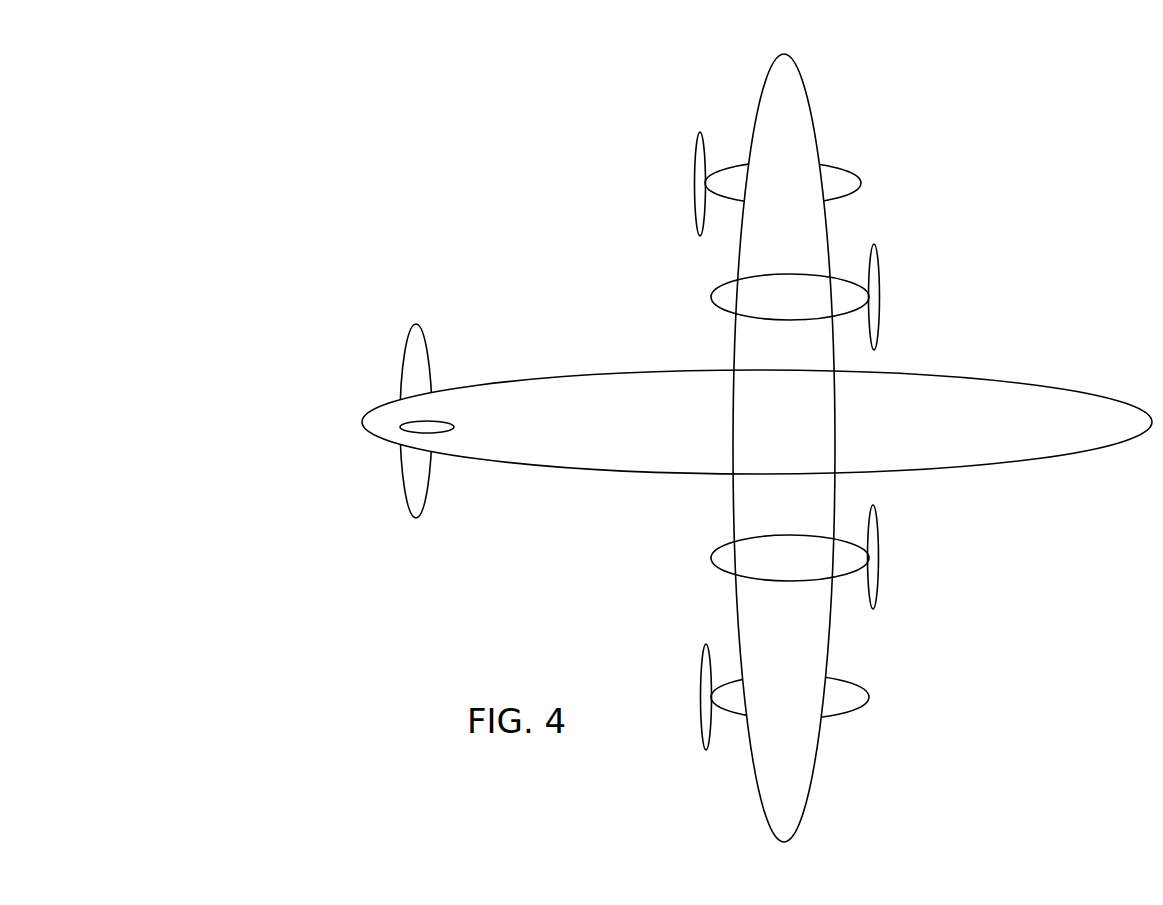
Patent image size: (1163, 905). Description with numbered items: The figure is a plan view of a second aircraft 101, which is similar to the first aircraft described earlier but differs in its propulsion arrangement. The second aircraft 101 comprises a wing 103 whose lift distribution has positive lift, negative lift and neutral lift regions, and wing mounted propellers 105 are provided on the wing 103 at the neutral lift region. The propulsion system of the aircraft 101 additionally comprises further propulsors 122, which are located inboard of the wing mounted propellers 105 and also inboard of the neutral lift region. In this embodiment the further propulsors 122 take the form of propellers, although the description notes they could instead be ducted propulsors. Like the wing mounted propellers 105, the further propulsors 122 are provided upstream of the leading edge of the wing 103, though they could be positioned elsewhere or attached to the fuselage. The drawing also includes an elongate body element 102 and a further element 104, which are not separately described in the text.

The second aircraft 101 is at (1040, 219).
The first wing 102 is at (577, 370).
The wing 103 is at (733, 508).
The tail rotor 104 is at (403, 490).
The wing mounted propellers 105 is at (667, 220).
The further propulsors 122 is at (840, 262).